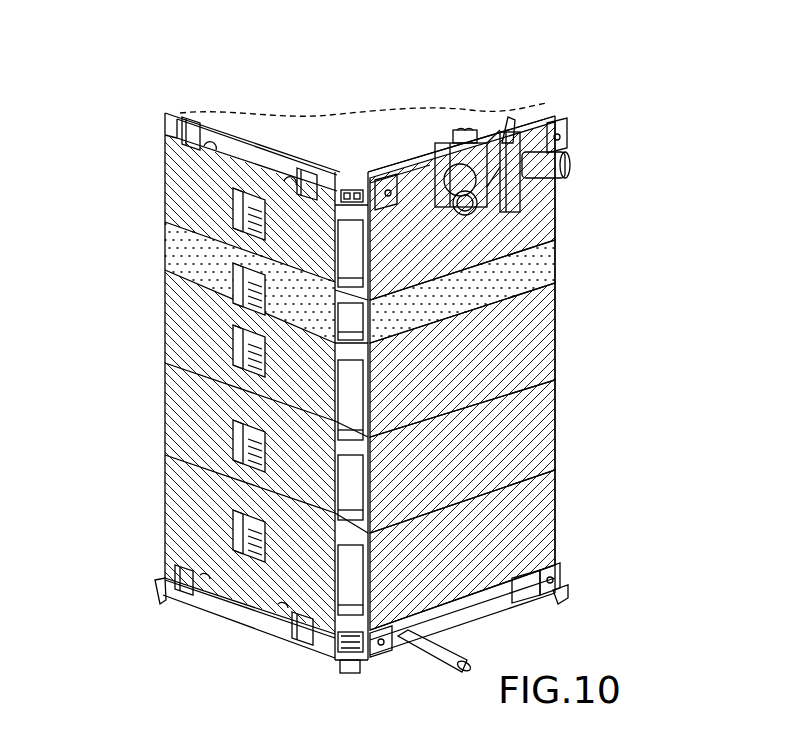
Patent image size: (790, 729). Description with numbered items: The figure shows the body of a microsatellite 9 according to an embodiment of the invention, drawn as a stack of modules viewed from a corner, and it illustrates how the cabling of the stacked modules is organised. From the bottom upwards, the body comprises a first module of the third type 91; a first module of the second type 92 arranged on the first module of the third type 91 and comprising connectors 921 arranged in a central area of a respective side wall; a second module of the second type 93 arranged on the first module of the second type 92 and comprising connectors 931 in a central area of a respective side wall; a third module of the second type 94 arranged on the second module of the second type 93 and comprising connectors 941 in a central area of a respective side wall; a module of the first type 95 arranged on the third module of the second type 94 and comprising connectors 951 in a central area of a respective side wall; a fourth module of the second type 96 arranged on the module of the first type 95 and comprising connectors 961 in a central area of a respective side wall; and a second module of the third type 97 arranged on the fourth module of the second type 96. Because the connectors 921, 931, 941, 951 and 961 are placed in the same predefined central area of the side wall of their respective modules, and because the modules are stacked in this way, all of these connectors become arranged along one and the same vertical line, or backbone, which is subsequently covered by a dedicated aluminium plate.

The microsatellite 9 is at (600, 103).
The second module of the third type 97 is at (165, 113).
The fourth module of the second type 96 is at (548, 202).
The module of the first type 95 is at (545, 260).
The third module of the second type 94 is at (545, 325).
The second module of the second type 93 is at (548, 413).
The first module of the second type 92 is at (540, 512).
The first module of the third type 91 is at (500, 600).
The connectors 961 is at (222, 215).
The connectors 951 is at (222, 278).
The connectors 941 is at (222, 350).
The connectors 931 is at (222, 445).
The connectors 921 is at (222, 535).